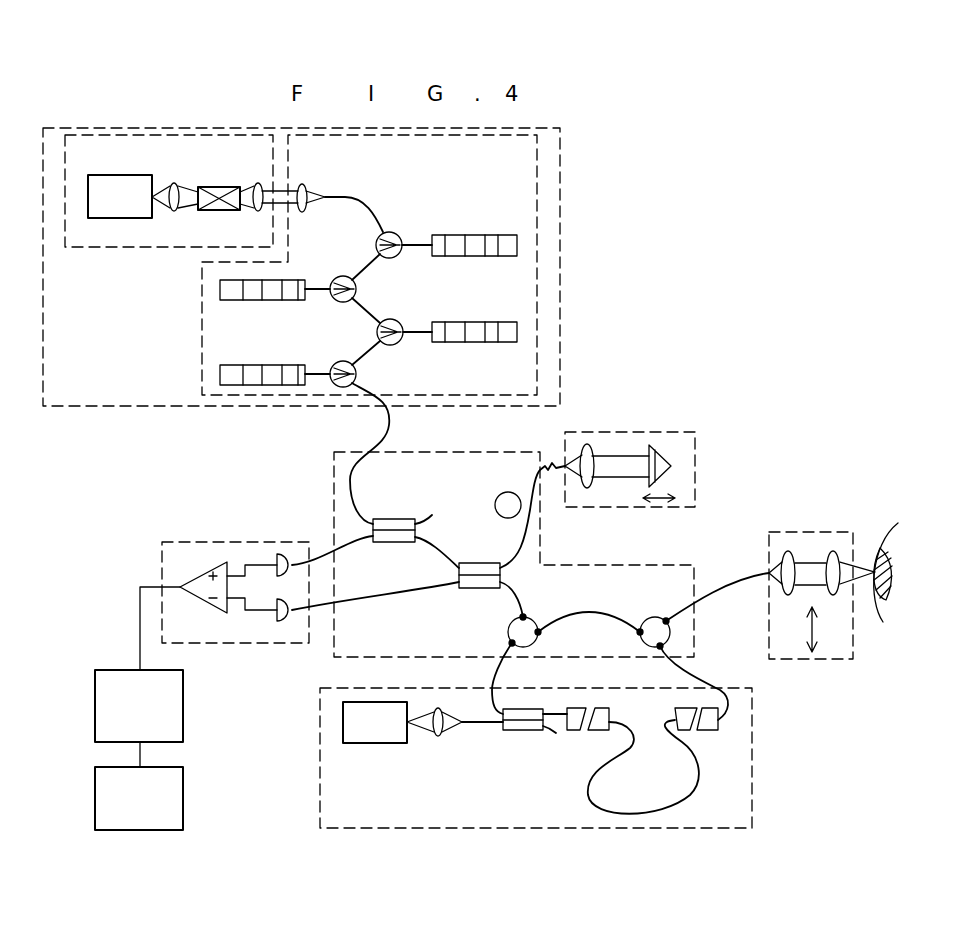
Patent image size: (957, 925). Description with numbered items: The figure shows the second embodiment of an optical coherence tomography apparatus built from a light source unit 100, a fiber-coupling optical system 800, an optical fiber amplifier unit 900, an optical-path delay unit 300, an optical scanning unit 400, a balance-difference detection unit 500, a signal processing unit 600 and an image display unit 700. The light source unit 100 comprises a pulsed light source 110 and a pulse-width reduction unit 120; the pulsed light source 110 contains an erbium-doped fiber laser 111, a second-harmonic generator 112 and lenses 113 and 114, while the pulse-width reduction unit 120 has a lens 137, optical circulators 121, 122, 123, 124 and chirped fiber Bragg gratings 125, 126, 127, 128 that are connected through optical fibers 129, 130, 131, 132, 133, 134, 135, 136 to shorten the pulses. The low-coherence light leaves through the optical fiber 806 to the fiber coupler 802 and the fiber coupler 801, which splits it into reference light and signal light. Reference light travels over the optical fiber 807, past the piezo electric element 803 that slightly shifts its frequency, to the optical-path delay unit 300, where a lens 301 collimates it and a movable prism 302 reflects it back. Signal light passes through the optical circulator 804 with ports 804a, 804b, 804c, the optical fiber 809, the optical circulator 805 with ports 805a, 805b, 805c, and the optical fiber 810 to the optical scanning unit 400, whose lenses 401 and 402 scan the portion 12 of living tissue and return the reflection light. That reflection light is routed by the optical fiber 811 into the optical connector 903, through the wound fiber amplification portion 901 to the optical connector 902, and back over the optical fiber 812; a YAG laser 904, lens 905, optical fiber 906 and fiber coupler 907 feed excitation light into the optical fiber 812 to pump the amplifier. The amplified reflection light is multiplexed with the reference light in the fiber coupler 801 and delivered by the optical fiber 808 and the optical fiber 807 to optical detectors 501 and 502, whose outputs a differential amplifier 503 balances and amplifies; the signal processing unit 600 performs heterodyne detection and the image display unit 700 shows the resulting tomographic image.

The portion 12 is at (900, 530).
The light source unit 100 is at (560, 185).
The pulsed light source 110 is at (120, 250).
The erbium-doped fiber laser 111 is at (113, 176).
The second-harmonic generator 112 is at (220, 186).
The lens 113 is at (174, 213).
The lens 114 is at (260, 213).
The pulse-width reduction unit 120 is at (200, 356).
The optical circulator 121 is at (387, 228).
The optical circulator 122 is at (357, 287).
The optical circulator 123 is at (398, 343).
The optical circulator 124 is at (337, 360).
The chirped fiber Bragg grating 125 is at (474, 233).
The chirped fiber Bragg grating 126 is at (256, 301).
The chirped fiber Bragg grating 127 is at (484, 320).
The chirped fiber Bragg grating 128 is at (265, 364).
The optical fiber 129 is at (357, 196).
The optical fiber 130 is at (420, 242).
The optical fiber 131 is at (364, 267).
The optical fiber 132 is at (318, 285).
The optical fiber 133 is at (372, 320).
The optical fiber 134 is at (422, 330).
The optical fiber 135 is at (367, 355).
The optical fiber 136 is at (317, 370).
The lens 137 is at (303, 183).
The optical-path delay unit 300 is at (697, 464).
The lens 301 is at (586, 443).
The prism 302 is at (664, 444).
The optical scanning unit 400 is at (815, 660).
The lens 401 is at (786, 550).
The lens 402 is at (832, 550).
The balance-difference detection unit 500 is at (302, 540).
The optical detector 501 is at (275, 555).
The optical detector 502 is at (274, 634).
The differential amplifier 503 is at (205, 560).
The signal processing unit 600 is at (183, 717).
The image display unit 700 is at (183, 806).
The fiber-coupling optical system 800 is at (500, 452).
The fiber coupler 801 is at (470, 560).
The fiber coupler 802 is at (390, 517).
The piezo electric element 803 is at (503, 492).
The optical circulator 804 is at (527, 615).
The port 804a is at (518, 616).
The port 804b is at (542, 632).
The port 804c is at (508, 643).
The optical circulator 805 is at (655, 617).
The port 805a is at (636, 634).
The port 805b is at (670, 623).
The port 805c is at (660, 650).
The optical fiber 806 is at (382, 428).
The optical fiber 807 is at (516, 540).
The optical fiber 808 is at (380, 598).
The optical fiber 809 is at (592, 611).
The optical fiber 810 is at (722, 572).
The optical fiber 811 is at (690, 676).
The optical fiber 812 is at (497, 680).
The optical fiber amplifier unit 900 is at (757, 776).
The fiber amplification portion 901 is at (590, 806).
The optical connector 902 is at (577, 732).
The optical connector 903 is at (706, 732).
The YAG laser 904 is at (365, 745).
The lens 905 is at (437, 738).
The optical fiber 906 is at (480, 725).
The fiber coupler 907 is at (526, 732).